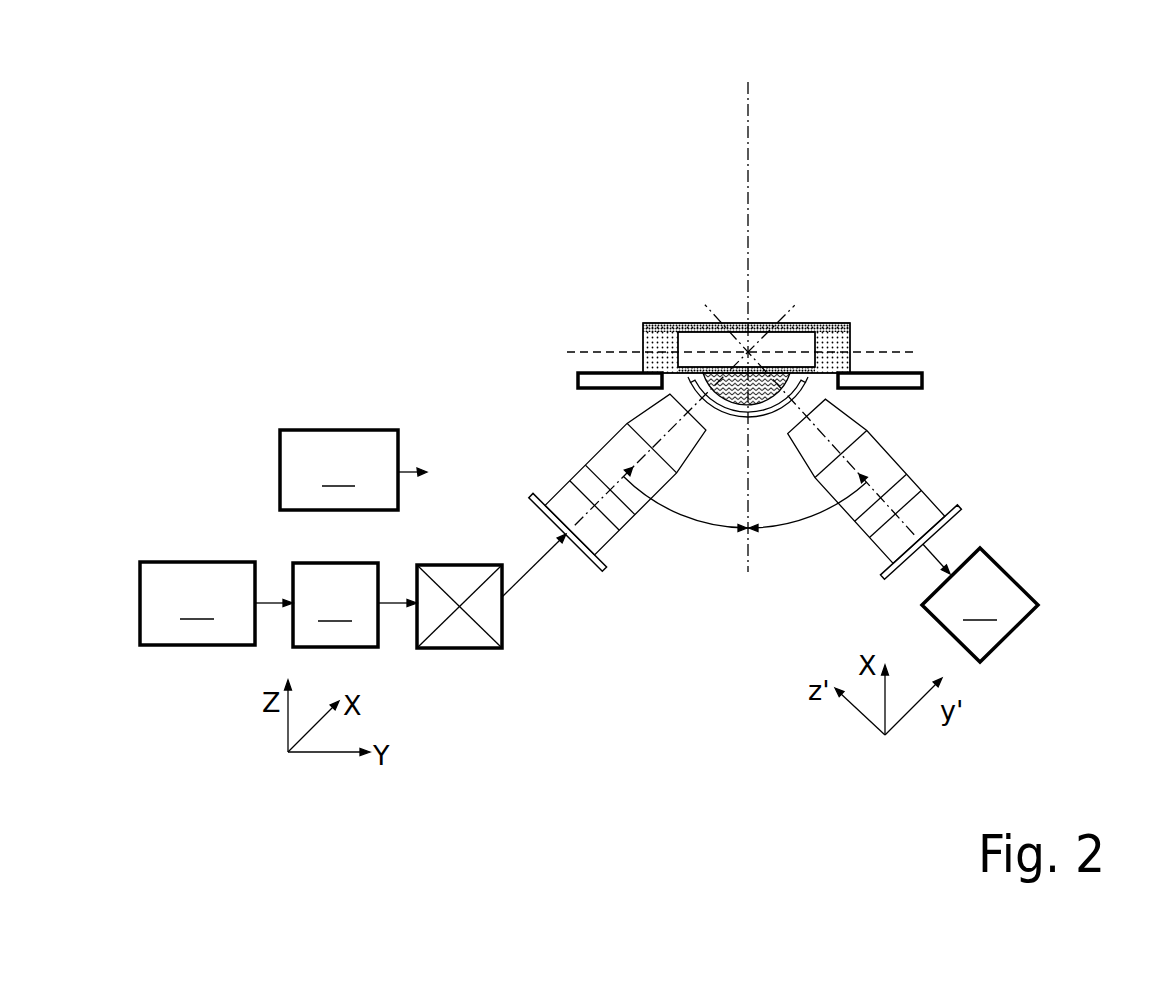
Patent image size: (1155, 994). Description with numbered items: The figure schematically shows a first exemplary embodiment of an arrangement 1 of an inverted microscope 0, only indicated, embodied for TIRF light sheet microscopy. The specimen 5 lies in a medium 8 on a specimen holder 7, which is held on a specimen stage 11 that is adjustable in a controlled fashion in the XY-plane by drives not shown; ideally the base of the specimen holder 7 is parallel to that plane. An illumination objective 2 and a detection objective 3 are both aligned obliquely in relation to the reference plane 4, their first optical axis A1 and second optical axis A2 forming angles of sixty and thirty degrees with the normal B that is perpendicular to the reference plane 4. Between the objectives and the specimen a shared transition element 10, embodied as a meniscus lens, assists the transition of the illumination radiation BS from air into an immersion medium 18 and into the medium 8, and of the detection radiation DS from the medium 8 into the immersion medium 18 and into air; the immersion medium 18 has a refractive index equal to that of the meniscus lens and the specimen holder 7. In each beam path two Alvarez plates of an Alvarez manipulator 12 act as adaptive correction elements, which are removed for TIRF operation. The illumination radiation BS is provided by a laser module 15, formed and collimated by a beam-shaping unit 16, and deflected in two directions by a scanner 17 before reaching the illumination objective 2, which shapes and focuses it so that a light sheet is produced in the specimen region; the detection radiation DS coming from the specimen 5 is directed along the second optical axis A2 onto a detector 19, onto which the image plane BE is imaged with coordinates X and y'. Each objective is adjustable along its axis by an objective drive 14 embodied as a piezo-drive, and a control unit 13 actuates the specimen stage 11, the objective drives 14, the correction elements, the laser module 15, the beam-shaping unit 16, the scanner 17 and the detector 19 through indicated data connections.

The inverted microscope 0 is at (479, 107).
The arrangement 1 is at (544, 156).
The illumination objective 2 is at (598, 463).
The detection objective 3 is at (948, 507).
The reference plane 4 is at (878, 363).
The specimen 5 is at (790, 343).
The specimen holder 7 is at (643, 348).
The medium 8 is at (648, 322).
The transition element 10 is at (694, 385).
The specimen stage 11 is at (578, 375).
The Alvarez manipulator 12 is at (580, 470).
The control unit 13 is at (353, 470).
The objective drive 14 is at (533, 496).
The laser module 15 is at (197, 603).
The beam-shaping unit 16 is at (335, 605).
The scanner 17 is at (457, 650).
The immersion medium 18 is at (766, 399).
The detector 19 is at (980, 605).
The normal B is at (750, 88).
The image plane BE is at (750, 323).
The illumination radiation BS is at (268, 601).
The detection radiation DS is at (938, 558).
The first optical axis A1 is at (605, 525).
The second optical axis A2 is at (829, 438).